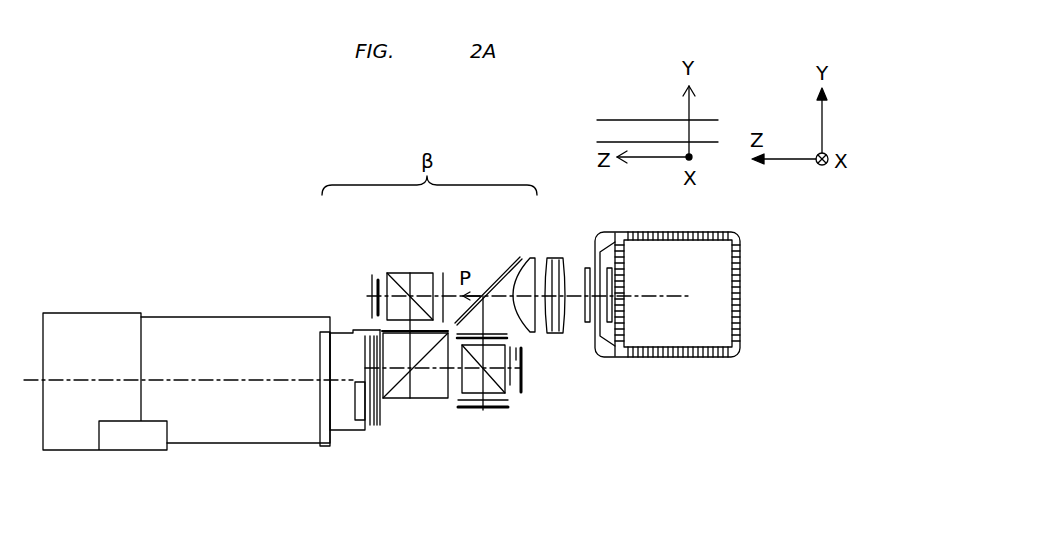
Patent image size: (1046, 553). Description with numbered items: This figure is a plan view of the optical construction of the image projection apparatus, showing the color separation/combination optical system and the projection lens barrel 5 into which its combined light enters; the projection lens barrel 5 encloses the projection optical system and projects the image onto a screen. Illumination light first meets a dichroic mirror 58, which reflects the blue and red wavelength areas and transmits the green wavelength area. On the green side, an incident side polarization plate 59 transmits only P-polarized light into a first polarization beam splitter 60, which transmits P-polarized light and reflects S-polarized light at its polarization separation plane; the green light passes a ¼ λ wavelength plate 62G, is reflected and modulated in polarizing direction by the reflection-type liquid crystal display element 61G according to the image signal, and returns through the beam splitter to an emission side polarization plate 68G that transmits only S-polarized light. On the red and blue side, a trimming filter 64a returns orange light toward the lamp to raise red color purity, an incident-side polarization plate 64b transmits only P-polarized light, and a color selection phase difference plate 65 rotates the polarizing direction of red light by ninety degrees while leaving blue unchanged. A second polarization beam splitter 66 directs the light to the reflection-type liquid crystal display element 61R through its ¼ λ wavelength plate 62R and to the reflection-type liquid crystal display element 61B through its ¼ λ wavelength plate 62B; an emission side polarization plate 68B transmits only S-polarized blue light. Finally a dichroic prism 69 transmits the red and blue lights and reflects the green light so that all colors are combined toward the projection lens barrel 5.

The projection lens barrel 5 is at (255, 323).
The dichroic mirror 58 is at (514, 259).
The incident side polarization plate for G 59 is at (443, 274).
The first polarization beam splitter 60 is at (407, 273).
The reflection-type liquid crystal display element for green 61G is at (372, 276).
The ¼ λ wavelength plate for green 62G is at (378, 279).
The emission side polarization plate for the green light 68G is at (382, 331).
The emission side polarization plate for the blue light 68B is at (443, 392).
The dichroic prism 69 is at (410, 398).
The second polarization beam splitter 66 is at (460, 393).
The reflection-type liquid crystal display element for blue 61B is at (477, 402).
The ¼ λ wavelength plate for blue 62B is at (503, 408).
The reflection-type liquid crystal display element for red 61R is at (512, 348).
The ¼ λ wavelength plate for red 62R is at (521, 392).
The color selection phase difference plate 65 is at (518, 342).
The trimming filter 64a is at (500, 334).
The incident-side polarization plate for the red and blue lights 64b is at (510, 338).